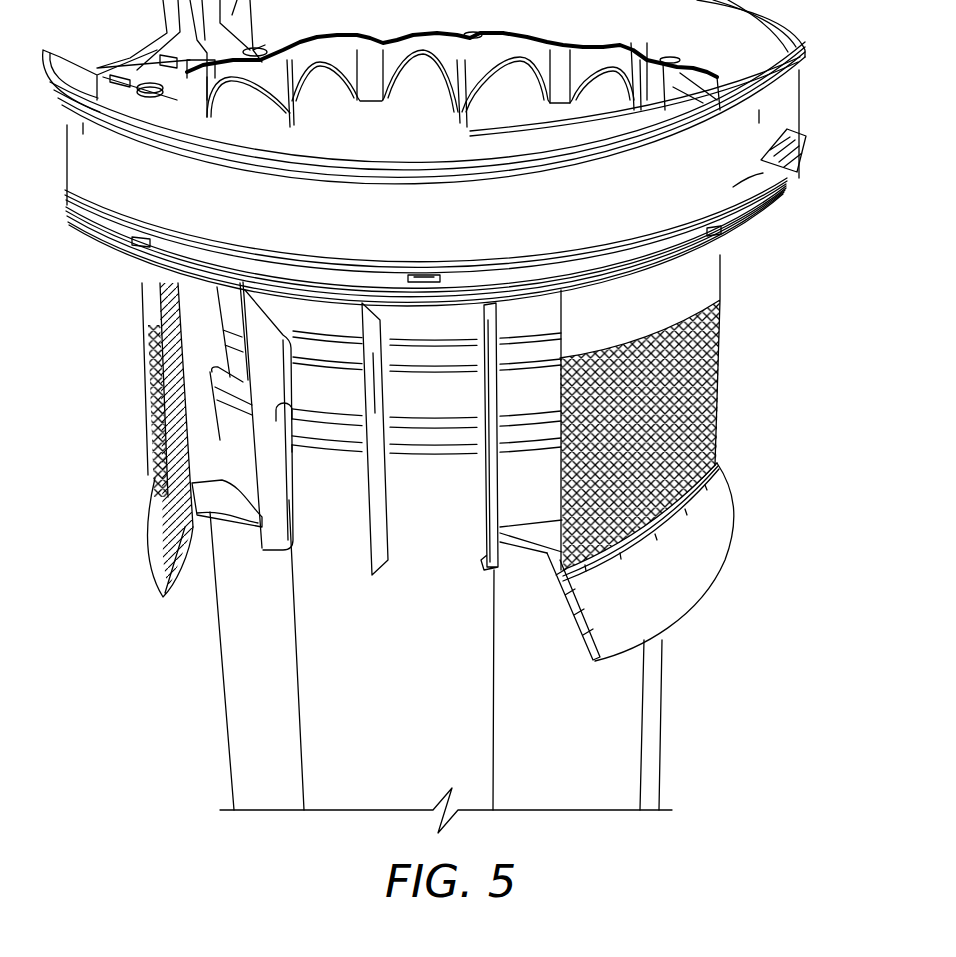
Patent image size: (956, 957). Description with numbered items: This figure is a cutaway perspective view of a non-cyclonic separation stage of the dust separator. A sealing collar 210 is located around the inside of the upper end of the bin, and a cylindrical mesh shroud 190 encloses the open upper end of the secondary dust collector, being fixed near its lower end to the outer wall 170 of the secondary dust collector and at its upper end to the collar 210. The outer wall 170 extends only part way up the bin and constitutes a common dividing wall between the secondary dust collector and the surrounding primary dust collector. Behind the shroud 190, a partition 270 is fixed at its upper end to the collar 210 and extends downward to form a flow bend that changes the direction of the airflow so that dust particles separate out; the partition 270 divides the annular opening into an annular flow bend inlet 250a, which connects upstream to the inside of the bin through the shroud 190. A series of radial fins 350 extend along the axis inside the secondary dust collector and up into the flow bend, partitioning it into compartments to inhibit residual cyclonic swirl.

The outer wall 170 is at (313, 662).
The cylindrical mesh shroud 190 is at (157, 380).
The sealing collar 210 is at (723, 177).
The annular flow bend inlet 250a is at (427, 401).
The partition 270 is at (325, 398).
The radial fins 350 is at (257, 323).